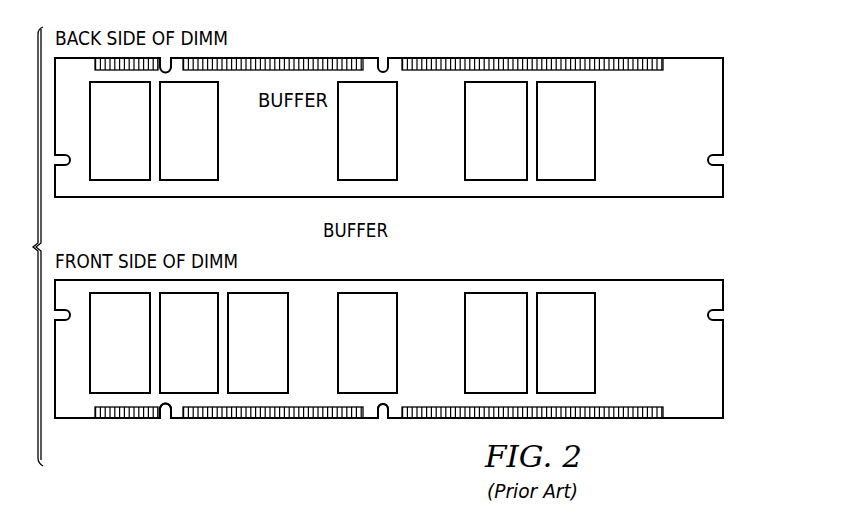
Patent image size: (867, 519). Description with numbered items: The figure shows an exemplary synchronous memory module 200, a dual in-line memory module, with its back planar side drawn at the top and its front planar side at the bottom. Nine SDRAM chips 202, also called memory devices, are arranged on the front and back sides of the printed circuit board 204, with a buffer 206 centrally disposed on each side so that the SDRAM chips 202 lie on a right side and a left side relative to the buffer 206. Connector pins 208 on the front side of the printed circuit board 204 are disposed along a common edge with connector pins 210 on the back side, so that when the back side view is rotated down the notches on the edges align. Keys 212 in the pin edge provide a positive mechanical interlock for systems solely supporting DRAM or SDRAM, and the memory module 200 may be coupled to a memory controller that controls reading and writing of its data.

The memory module 200 is at (424, 270).
The SDRAM chips 202 is at (138, 145).
The printed circuit board 204 is at (724, 116).
The buffer 206 is at (337, 131).
The connector pins 208 is at (636, 406).
The connector pins 210 is at (635, 71).
The keys 212 is at (164, 419).